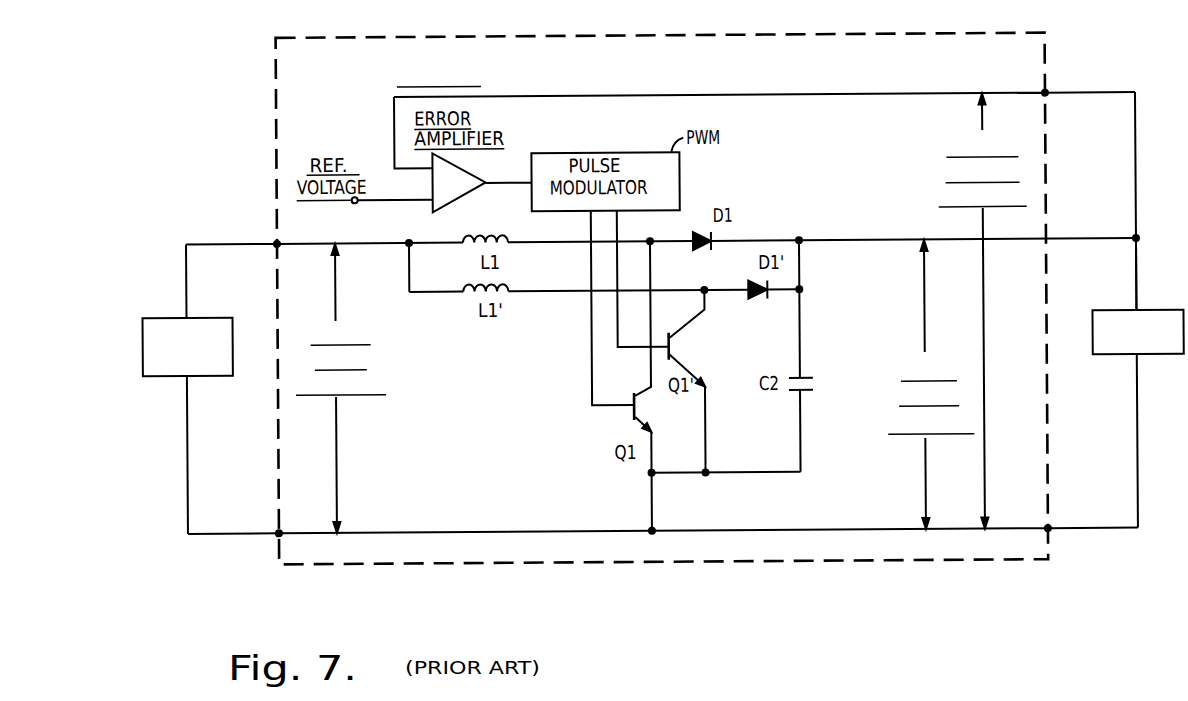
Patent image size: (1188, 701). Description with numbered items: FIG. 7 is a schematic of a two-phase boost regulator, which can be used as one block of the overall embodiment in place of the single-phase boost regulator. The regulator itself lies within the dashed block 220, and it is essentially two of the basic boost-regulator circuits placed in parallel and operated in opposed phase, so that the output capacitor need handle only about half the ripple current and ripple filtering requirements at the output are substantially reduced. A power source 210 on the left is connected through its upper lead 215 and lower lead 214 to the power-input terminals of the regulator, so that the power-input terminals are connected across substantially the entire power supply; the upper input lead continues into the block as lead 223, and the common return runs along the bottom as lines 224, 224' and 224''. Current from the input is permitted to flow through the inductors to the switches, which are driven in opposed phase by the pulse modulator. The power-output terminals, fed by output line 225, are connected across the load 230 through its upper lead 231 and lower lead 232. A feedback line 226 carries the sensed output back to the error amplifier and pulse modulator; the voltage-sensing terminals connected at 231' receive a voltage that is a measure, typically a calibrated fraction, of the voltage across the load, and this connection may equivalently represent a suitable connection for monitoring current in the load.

The power source 210 is at (165, 377).
The power source lower lead 214 is at (218, 537).
The power source upper lead 215 is at (245, 244).
The dashed block 220 is at (710, 567).
The power-input terminal lead 223 is at (297, 248).
The common (ground) line 224 is at (465, 511).
The transistor emitter return lead 224' is at (631, 503).
The common output return line 224'' is at (851, 510).
The power-output line 225 is at (843, 245).
The feedback line 226 is at (833, 99).
The load 230 is at (1172, 360).
The load upper lead 231 is at (1158, 274).
The voltage-sensing terminal connection 231' is at (1114, 201).
The load lower lead 232 is at (1083, 534).